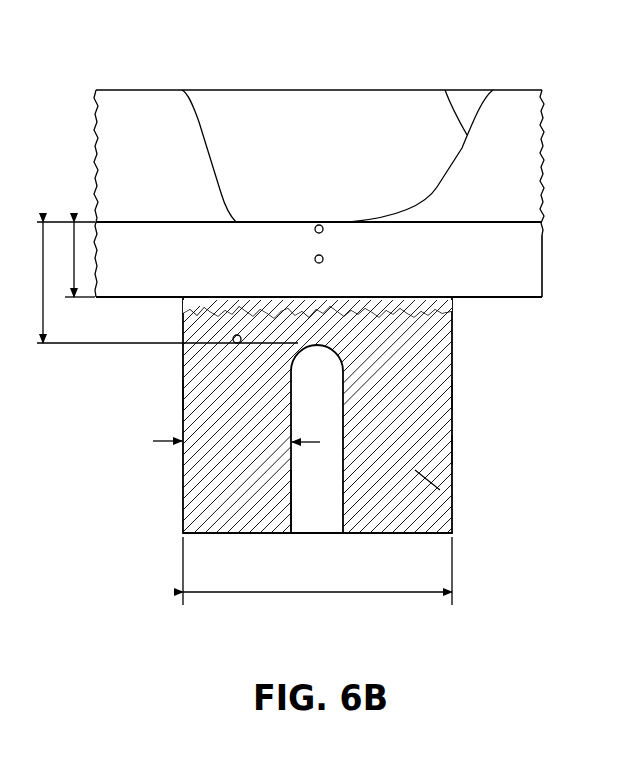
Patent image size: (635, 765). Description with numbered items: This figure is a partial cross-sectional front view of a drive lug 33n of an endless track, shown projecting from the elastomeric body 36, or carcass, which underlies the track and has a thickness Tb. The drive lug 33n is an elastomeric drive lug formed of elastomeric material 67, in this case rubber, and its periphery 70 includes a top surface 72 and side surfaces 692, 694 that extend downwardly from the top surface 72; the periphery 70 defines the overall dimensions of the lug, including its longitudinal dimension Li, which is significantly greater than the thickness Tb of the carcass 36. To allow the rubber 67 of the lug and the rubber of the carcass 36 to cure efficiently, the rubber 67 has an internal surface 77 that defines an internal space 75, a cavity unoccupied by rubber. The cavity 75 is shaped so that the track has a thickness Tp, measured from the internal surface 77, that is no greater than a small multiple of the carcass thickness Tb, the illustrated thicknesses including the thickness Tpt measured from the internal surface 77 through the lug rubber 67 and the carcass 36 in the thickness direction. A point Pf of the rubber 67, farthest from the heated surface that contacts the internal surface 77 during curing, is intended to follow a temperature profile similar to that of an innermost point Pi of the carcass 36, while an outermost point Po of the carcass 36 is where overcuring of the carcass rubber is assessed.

The elastomeric body 36 is at (526, 245).
The drive lug 33n is at (483, 347).
The internal space 75 is at (331, 405).
The side surface 692 is at (182, 392).
The side surface 694 is at (453, 395).
The periphery 70 is at (453, 450).
The elastomeric material 67 is at (415, 478).
The top surface 72 is at (262, 535).
The internal surface 77 is at (293, 487).
The innermost point Pi is at (313, 259).
The outermost point Po is at (324, 229).
The point of the rubber of the drive lug Pf is at (233, 338).
The thickness in thickness direction Tpt is at (152, 282).
The thickness of the carcass Tb is at (72, 259).
The thickness measured from the internal surface Tp is at (202, 444).
The longitudinal dimension Li is at (317, 579).